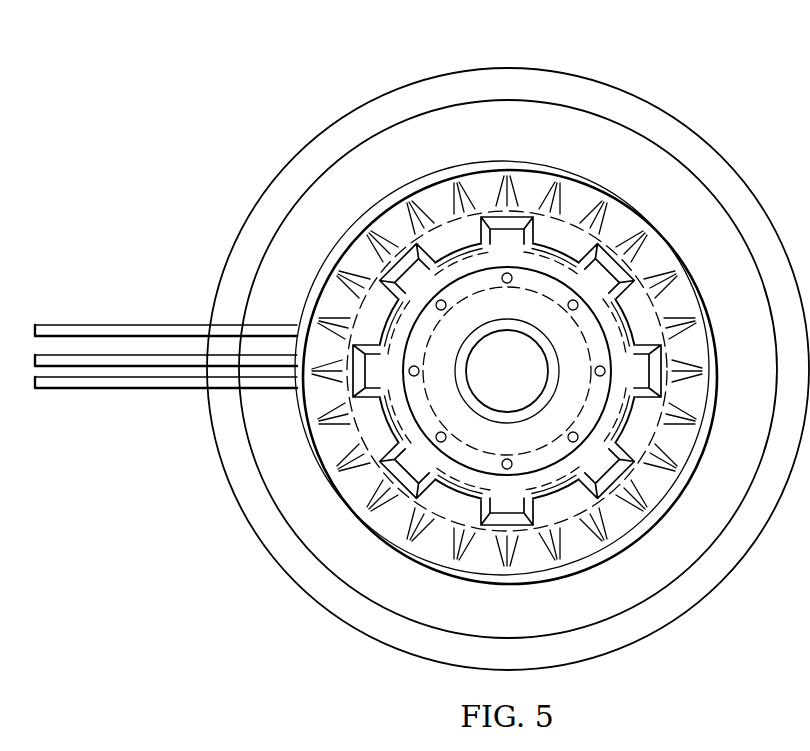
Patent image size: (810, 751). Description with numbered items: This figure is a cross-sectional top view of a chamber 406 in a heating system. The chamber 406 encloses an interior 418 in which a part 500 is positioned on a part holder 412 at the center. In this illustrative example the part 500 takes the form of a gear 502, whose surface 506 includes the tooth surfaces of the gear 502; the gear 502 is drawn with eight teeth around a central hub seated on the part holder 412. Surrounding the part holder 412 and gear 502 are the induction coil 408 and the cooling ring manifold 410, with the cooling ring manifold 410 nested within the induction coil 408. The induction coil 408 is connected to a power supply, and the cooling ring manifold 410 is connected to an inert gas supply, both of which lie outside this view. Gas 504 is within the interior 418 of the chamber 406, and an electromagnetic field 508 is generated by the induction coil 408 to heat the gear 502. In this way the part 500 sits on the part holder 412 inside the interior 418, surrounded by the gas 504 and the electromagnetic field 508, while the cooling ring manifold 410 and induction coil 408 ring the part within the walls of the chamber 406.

The chamber 406 is at (508, 78).
The interior 418 is at (640, 143).
The induction coil 408 is at (506, 586).
The cooling ring manifold 410 is at (590, 562).
The part holder 412 is at (488, 383).
The part 500 is at (488, 208).
The gear 502 is at (612, 258).
The gas 504 is at (525, 190).
The surface 506 is at (398, 253).
The electromagnetic field 508 is at (438, 534).